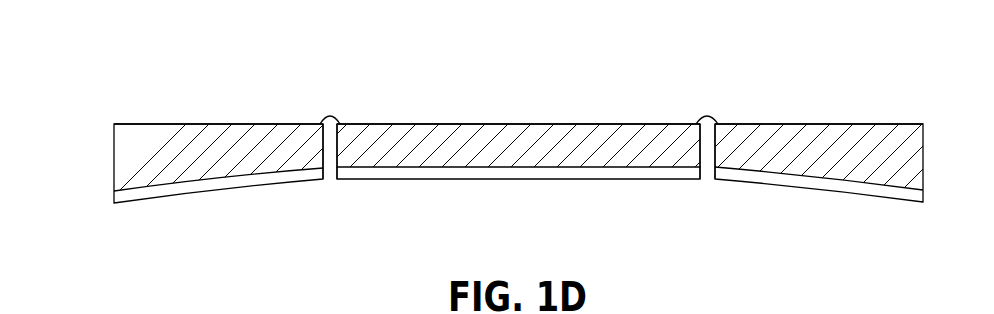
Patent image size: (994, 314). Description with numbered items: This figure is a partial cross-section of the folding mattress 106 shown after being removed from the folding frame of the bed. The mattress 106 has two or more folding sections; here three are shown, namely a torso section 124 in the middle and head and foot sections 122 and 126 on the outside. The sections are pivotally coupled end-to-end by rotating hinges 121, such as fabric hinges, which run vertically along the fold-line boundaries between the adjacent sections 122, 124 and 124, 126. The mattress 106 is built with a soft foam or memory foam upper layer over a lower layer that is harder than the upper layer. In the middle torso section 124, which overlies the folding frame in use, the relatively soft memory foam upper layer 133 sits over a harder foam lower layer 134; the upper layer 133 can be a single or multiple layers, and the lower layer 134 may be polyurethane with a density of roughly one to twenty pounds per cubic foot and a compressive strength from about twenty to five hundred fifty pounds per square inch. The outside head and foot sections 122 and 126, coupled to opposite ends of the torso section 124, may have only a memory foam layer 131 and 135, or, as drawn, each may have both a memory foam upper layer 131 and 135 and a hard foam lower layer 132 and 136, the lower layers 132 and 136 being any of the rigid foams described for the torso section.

The folding mattress 106 is at (114, 94).
The rotating hinges 121 is at (330, 116).
The head section 122 is at (216, 124).
The torso section 124 is at (522, 124).
The foot section 126 is at (818, 124).
The memory foam upper layer 131 is at (133, 155).
The hard foam lower layer 132 is at (167, 196).
The memory foam upper layer 133 is at (395, 155).
The harder foam lower layer 134 is at (544, 180).
The memory foam upper layer 135 is at (760, 155).
The hard foam lower layer 136 is at (833, 193).